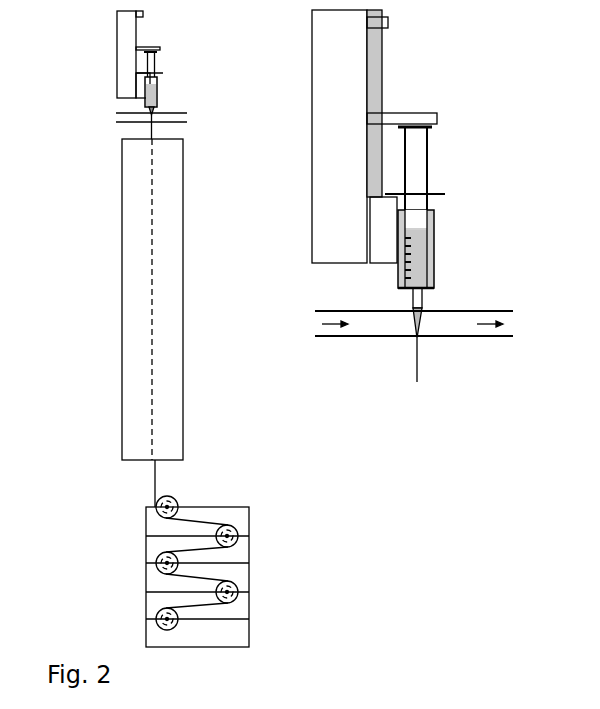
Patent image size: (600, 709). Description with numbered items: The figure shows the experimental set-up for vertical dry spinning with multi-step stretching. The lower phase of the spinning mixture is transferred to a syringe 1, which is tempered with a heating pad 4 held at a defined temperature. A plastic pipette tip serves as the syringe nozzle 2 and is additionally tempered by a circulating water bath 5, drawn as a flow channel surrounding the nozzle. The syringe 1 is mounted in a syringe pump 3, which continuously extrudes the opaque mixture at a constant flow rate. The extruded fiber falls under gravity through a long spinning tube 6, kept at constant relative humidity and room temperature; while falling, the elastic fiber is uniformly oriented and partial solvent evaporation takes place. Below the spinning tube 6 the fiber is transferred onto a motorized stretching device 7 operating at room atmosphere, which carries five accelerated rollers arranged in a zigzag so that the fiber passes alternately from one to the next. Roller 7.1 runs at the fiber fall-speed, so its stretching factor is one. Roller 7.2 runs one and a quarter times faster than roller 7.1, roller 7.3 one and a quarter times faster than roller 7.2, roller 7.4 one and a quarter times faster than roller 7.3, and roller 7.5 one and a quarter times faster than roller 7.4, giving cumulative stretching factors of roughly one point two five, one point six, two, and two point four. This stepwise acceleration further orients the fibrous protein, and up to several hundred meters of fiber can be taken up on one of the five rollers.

The syringe 1 is at (415, 172).
The syringe nozzle 2 is at (420, 337).
The syringe pump 3 is at (378, 136).
The heating pad 4 is at (433, 227).
The circulating water bath 5 is at (414, 323).
The spinning tube 6 is at (152, 299).
The motorized stretching device 7 is at (203, 542).
The roller 1 7.1 is at (168, 514).
The roller 2 7.2 is at (227, 543).
The roller 3 7.3 is at (168, 570).
The roller 4 7.4 is at (227, 599).
The roller 5 7.5 is at (168, 626).